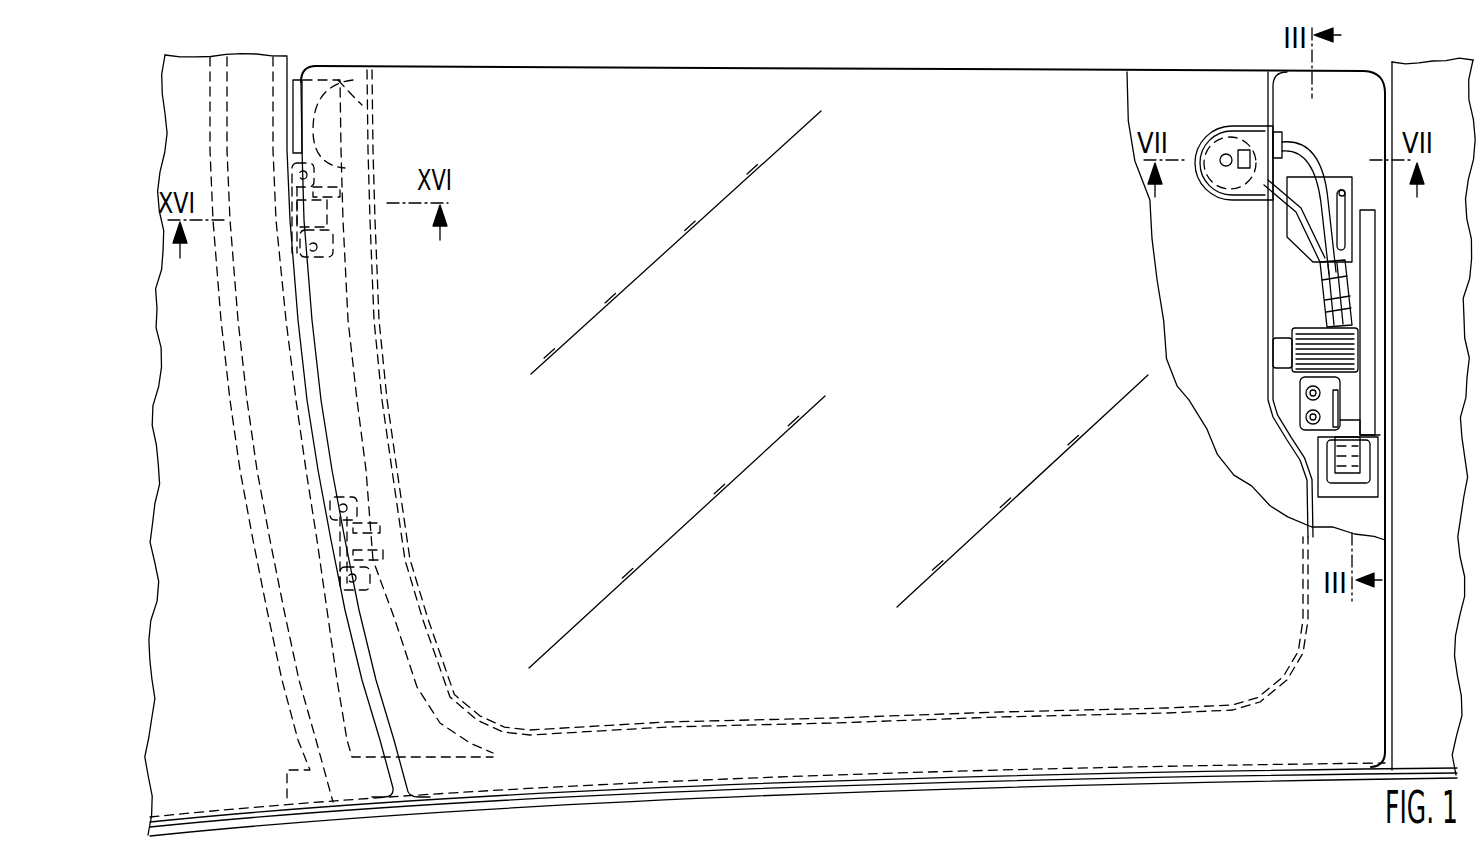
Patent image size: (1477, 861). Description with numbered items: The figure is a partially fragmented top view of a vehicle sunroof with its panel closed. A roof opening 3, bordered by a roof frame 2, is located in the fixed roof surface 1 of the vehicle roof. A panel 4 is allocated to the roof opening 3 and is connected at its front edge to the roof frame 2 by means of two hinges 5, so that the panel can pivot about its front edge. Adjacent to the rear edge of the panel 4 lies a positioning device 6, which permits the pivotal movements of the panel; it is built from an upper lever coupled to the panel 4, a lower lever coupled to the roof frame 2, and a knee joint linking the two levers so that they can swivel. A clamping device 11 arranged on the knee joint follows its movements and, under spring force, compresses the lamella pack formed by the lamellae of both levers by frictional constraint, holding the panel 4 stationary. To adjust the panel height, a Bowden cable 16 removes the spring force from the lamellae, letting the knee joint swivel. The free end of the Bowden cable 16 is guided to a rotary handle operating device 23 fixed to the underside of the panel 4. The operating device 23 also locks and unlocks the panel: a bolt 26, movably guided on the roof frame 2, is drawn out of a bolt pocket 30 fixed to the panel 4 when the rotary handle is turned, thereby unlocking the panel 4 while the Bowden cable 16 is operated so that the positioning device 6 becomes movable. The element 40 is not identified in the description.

The fixed roof surface 1 is at (230, 717).
The roof frame 2 is at (1340, 106).
The roof opening 3 is at (648, 730).
The panel 4 is at (845, 340).
The hinges 5 is at (350, 185).
The positioning device 6 is at (1368, 340).
The clamping device 11 is at (1370, 300).
The Bowden cable 16 is at (1325, 150).
The rotary handle operating device 23 is at (1222, 120).
The bolt 26 is at (1370, 387).
The bolt pocket 30 is at (1370, 490).
The support step 40 is at (1377, 417).